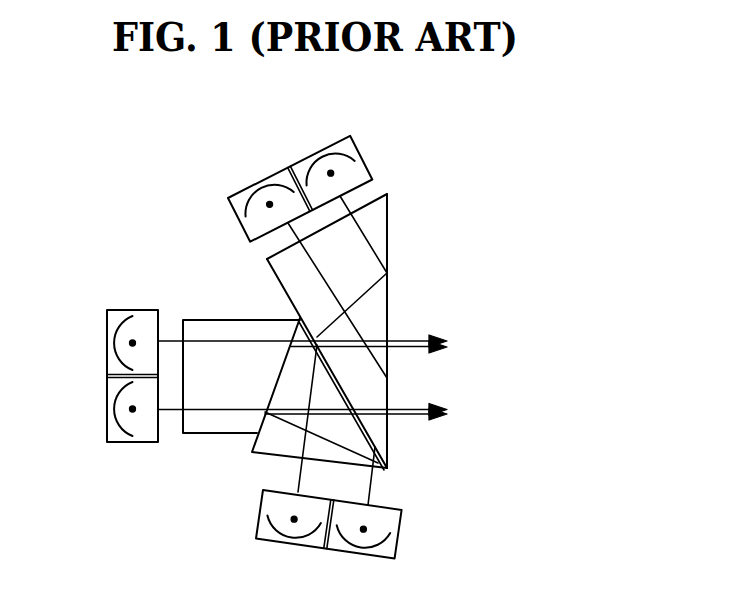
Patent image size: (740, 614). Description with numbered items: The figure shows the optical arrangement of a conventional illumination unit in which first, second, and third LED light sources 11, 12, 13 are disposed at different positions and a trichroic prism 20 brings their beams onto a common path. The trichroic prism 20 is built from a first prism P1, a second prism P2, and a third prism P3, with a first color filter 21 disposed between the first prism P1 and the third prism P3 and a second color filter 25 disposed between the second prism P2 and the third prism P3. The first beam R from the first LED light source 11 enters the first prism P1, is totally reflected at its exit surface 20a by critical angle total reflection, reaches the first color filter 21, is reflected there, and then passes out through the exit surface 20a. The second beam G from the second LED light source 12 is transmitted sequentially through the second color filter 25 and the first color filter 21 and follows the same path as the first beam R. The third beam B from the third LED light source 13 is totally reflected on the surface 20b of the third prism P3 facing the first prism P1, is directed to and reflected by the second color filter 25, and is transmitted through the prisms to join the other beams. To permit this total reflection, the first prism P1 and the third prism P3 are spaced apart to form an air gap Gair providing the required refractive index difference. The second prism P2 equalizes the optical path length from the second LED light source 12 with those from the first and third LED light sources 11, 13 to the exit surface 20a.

The first LED light source 11 is at (368, 158).
The second LED light source 12 is at (107, 420).
The third LED light source 13 is at (400, 552).
The trichroic prism 20 is at (386, 318).
The exit surface 20a is at (387, 304).
The surface of the third prism 20b is at (367, 429).
The first color filter 21 is at (370, 392).
The second color filter 25 is at (270, 411).
The first prism P1 is at (380, 232).
The second prism P2 is at (208, 330).
The third prism P3 is at (254, 456).
The first beam R is at (382, 252).
The second beam G is at (197, 412).
The air gap Gair is at (372, 443).
The third beam B is at (375, 489).